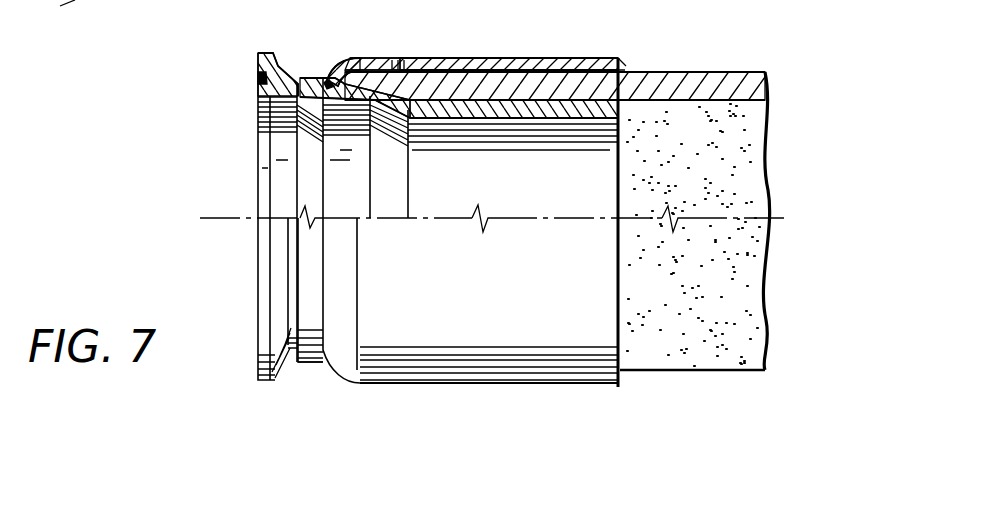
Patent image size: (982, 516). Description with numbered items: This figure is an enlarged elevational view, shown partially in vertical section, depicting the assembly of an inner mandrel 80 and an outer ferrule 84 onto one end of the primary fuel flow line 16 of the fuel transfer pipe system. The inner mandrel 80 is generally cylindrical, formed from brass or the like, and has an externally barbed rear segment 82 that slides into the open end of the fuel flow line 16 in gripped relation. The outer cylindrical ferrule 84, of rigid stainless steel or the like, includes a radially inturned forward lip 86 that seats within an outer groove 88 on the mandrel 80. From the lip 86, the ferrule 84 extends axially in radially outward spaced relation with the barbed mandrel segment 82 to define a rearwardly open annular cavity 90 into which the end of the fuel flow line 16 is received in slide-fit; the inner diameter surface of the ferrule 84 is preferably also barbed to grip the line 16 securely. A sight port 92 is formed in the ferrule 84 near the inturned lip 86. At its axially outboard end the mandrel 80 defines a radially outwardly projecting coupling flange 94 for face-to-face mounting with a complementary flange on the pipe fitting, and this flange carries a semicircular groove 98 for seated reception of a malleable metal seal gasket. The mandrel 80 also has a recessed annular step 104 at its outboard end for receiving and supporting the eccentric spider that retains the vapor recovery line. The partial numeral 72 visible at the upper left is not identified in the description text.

The primary fuel flow line 16 is at (710, 80).
The tube 72 is at (60, 6).
The inner mandrel 80 is at (432, 110).
The externally barbed rear segment 82 is at (590, 118).
The outer cylindrical ferrule 84 is at (517, 62).
The radially inturned forward lip 86 is at (330, 78).
The outer groove 88 is at (330, 108).
The annular cavity 90 is at (622, 72).
The sight port 92 is at (405, 60).
The coupling flange 94 is at (258, 270).
The semicircular groove 98 is at (258, 78).
The recessed annular step 104 is at (258, 172).